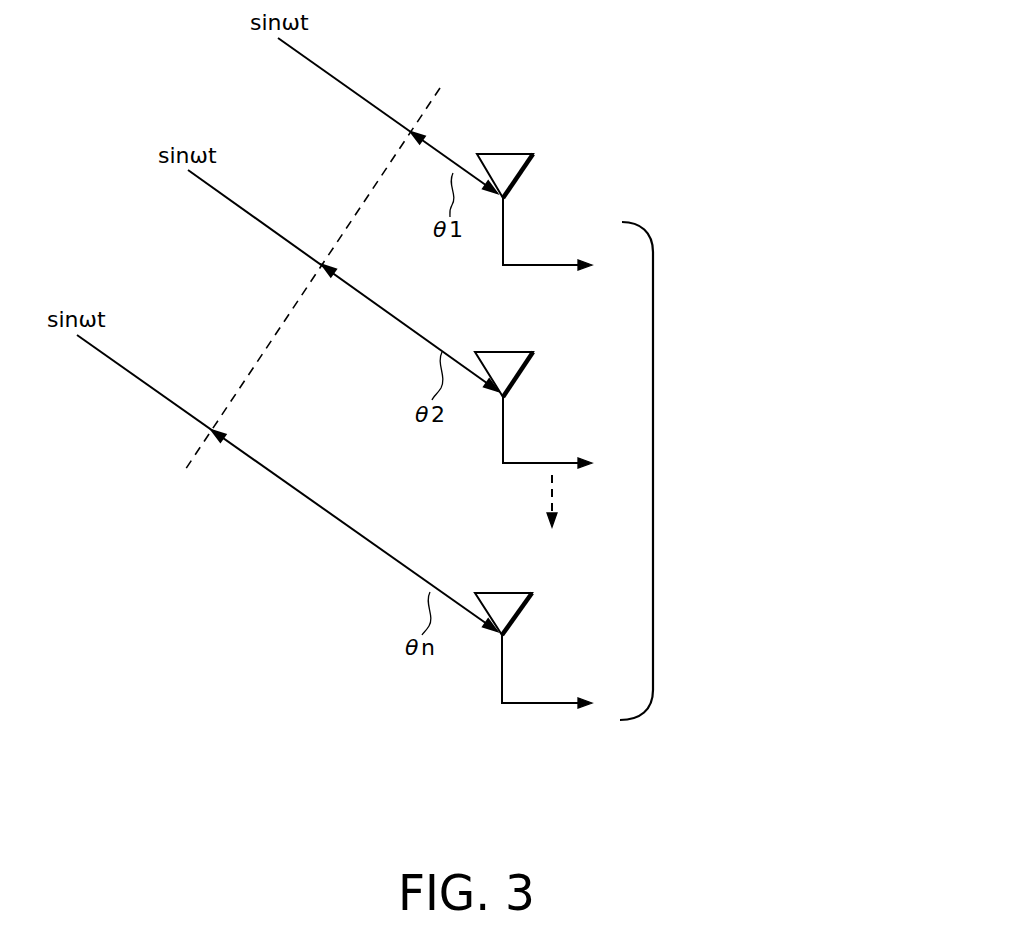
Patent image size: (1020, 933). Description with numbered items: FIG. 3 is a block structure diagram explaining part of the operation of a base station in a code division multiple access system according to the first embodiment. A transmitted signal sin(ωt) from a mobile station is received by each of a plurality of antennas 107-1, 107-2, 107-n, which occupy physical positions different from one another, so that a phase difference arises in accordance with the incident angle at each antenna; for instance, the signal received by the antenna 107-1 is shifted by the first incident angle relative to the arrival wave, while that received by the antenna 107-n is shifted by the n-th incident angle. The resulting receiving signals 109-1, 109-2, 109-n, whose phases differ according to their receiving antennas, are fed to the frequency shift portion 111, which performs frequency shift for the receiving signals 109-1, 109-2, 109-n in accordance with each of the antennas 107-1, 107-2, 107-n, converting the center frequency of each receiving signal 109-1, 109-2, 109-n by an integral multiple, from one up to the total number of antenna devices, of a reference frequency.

The antenna 107-1 is at (497, 152).
The antenna 107-2 is at (502, 352).
The antenna 107-n is at (490, 592).
The receiving signal 109-1 is at (543, 265).
The receiving signal 109-2 is at (548, 463).
The receiving signal 109-n is at (548, 703).
The frequency shift portion 111 is at (757, 471).